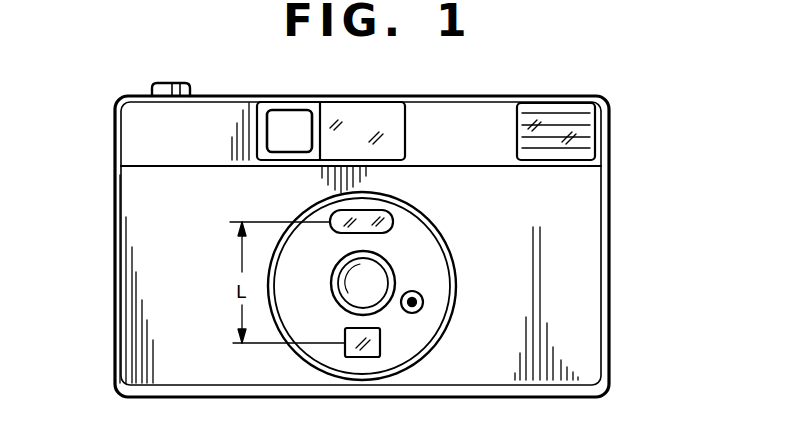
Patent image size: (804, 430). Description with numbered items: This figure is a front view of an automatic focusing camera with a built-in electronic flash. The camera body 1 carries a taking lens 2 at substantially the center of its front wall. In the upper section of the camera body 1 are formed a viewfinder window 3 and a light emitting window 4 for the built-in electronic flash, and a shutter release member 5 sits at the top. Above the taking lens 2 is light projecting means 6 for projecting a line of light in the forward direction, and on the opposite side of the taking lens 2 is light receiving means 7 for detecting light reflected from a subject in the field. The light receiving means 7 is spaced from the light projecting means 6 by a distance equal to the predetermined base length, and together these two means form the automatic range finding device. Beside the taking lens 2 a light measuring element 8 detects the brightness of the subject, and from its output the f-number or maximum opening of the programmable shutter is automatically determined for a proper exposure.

The camera body 1 is at (610, 289).
The taking lens 2 is at (383, 280).
The viewfinder window 3 is at (405, 127).
The light emitting window 4 is at (595, 128).
The shutter release member 5 is at (152, 87).
The light projecting means 6 is at (393, 219).
The light receiving means 7 is at (380, 345).
The light measuring element 8 is at (423, 302).